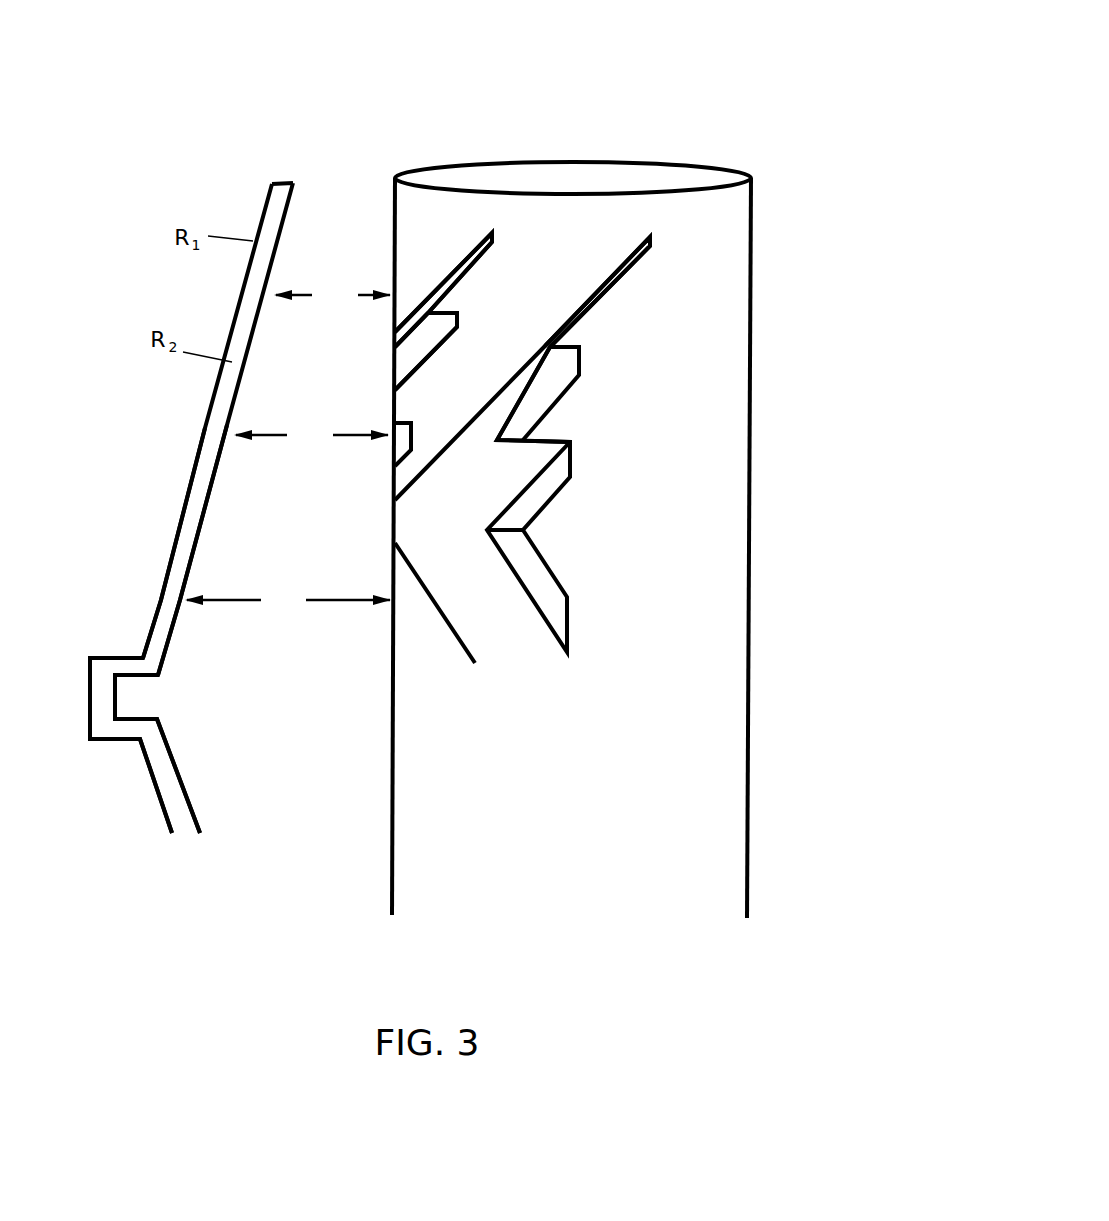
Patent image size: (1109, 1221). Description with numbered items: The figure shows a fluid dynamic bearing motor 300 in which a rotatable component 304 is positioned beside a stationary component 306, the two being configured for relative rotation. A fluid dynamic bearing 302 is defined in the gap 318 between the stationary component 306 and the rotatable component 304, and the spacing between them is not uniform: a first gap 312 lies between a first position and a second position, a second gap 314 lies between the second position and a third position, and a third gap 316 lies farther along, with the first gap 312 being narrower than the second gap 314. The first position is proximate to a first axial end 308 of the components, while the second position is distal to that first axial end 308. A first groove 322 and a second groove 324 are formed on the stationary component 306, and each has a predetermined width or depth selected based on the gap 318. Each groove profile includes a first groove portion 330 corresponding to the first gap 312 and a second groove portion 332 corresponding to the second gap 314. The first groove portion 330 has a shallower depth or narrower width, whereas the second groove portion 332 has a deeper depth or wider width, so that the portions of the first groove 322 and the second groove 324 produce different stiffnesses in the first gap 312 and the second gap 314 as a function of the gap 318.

The fluid dynamic bearing motor 300 is at (714, 78).
The fluid dynamic bearing 302 is at (335, 172).
The rotatable component 304 is at (200, 488).
The stationary component 306 is at (683, 641).
The first axial end 308 is at (552, 190).
The first gap 312 is at (332, 295).
The second gap 314 is at (311, 435).
The third gap 316 is at (288, 600).
The gap 318 is at (262, 687).
The first groove 322 is at (403, 438).
The second groove 324 is at (482, 475).
The first groove portion 330 is at (600, 287).
The second groove portion 332 is at (520, 377).